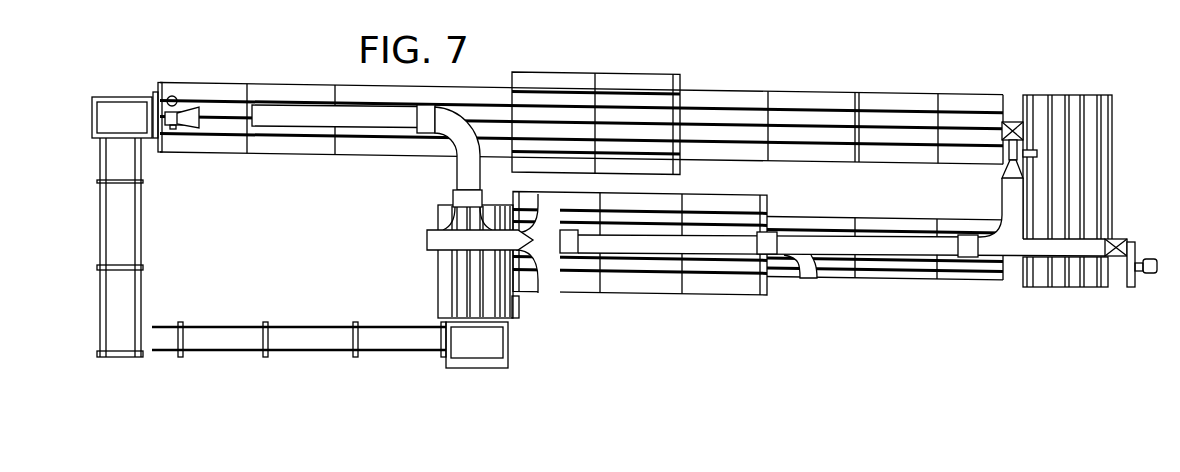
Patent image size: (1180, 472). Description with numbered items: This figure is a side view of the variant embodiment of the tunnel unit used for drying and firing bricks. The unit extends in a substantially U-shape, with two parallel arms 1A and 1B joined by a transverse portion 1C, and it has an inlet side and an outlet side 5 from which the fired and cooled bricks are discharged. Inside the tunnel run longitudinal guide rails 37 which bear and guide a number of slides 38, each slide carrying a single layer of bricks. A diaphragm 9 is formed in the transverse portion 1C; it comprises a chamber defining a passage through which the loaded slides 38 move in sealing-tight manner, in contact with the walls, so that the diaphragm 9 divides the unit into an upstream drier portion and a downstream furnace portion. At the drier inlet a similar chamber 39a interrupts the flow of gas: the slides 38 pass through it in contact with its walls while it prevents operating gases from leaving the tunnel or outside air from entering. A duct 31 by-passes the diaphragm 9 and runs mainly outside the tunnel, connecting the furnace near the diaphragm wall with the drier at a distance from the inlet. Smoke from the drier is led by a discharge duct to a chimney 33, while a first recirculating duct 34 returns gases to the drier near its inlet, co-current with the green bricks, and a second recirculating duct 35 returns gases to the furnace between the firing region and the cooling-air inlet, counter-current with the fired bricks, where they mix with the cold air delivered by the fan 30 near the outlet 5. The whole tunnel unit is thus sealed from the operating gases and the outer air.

The parallel arm 1A is at (873, 278).
The parallel arm 1B is at (718, 92).
The transverse portion 1C is at (1112, 200).
The outlet side 5 is at (158, 82).
The diaphragm 9 is at (1097, 207).
The fan 30 is at (190, 110).
The duct 31 is at (893, 243).
The smoke-discharging chimney 33 is at (1125, 270).
The first recirculating duct 34 is at (450, 242).
The second recirculating duct 35 is at (310, 115).
The longitudinal guide rails 37 is at (273, 102).
The slides 38 is at (113, 108).
The chamber for interrupting the flow of gas 39a is at (516, 307).